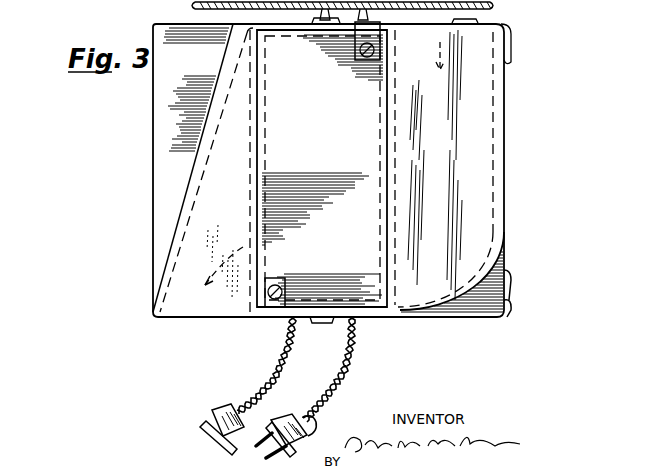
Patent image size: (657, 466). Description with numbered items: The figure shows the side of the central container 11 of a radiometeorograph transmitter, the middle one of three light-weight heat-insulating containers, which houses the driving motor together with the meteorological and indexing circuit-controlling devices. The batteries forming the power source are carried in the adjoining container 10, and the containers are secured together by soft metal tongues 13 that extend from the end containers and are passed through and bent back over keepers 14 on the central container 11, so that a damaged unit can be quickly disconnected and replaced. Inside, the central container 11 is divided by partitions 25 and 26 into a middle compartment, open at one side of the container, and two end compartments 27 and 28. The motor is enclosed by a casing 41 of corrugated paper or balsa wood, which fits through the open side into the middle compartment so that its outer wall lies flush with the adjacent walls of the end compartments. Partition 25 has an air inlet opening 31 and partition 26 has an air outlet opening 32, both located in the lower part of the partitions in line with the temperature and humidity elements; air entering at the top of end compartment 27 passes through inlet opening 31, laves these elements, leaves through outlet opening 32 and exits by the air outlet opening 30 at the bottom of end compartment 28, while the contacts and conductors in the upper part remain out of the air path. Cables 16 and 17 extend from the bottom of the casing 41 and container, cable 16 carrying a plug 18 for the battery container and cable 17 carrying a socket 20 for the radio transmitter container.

The container 10 is at (144, 108).
The central container 11 is at (172, 218).
The soft metal tongues 13 is at (506, 276).
The keepers 14 is at (513, 298).
The cable 16 is at (354, 360).
The cable 17 is at (282, 356).
The plug 18 is at (307, 441).
The socket 20 is at (215, 420).
The partition 25 is at (396, 147).
The partition 26 is at (247, 154).
The end compartment 27 is at (480, 152).
The end compartment 28 is at (180, 267).
The air outlet opening 30 is at (170, 318).
The air inlet opening 31 is at (396, 220).
The air outlet opening 32 is at (248, 220).
The casing 41 is at (378, 248).